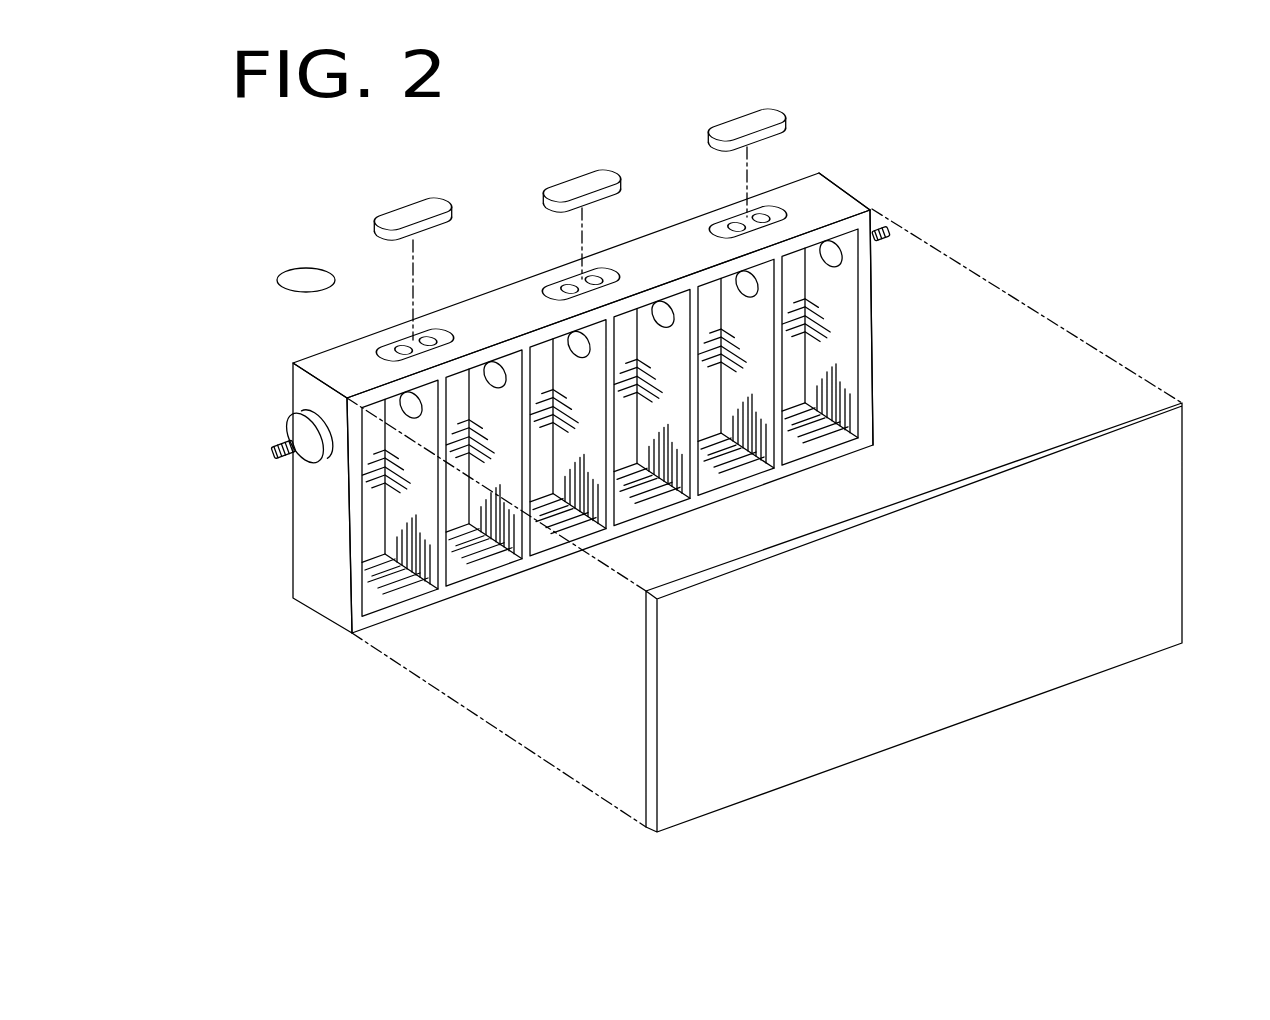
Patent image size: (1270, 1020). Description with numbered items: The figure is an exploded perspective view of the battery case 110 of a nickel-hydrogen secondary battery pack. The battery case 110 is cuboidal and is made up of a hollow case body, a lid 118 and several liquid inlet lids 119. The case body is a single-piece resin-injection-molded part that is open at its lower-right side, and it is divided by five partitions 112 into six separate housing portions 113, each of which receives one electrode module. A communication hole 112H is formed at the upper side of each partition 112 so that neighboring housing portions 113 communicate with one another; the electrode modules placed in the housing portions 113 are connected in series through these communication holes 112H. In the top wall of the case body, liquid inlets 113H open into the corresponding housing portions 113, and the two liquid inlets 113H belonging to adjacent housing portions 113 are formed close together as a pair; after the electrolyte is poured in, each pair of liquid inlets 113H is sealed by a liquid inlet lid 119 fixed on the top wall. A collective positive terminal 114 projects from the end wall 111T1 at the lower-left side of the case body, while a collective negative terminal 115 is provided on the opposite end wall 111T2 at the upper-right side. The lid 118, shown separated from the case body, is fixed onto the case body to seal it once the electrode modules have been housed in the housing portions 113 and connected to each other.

The battery case 110 is at (262, 267).
The end wall 111T1 is at (313, 553).
The end wall 111T2 is at (866, 368).
The partition 112 is at (508, 500).
The communication hole 112H is at (755, 287).
The housing portion 113 is at (391, 583).
The liquid inlet 113H is at (390, 339).
The collective positive terminal 114 is at (287, 440).
The collective negative terminal 115 is at (889, 238).
The lid 118 is at (1145, 487).
The liquid inlet lid 119 is at (402, 213).